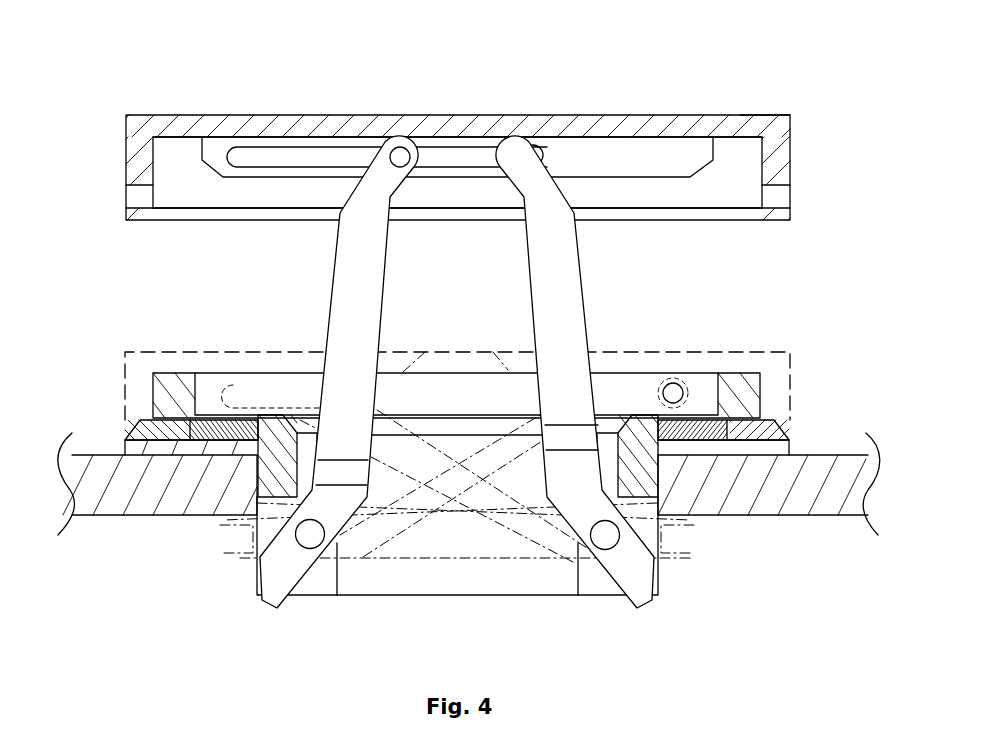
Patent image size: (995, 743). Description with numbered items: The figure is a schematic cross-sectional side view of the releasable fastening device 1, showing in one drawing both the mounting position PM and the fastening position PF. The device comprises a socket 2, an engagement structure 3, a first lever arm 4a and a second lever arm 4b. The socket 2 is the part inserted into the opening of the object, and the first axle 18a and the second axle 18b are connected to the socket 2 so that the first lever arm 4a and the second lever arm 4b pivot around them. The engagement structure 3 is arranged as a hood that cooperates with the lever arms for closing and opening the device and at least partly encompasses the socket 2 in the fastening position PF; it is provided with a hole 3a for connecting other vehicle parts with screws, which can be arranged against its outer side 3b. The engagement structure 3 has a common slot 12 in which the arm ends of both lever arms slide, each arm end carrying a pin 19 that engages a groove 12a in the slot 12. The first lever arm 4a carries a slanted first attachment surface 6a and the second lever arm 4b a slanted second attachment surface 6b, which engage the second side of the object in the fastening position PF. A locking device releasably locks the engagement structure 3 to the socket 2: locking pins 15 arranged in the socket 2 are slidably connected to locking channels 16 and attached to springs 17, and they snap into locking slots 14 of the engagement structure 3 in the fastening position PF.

The releasable fastening device 1 is at (100, 72).
The socket 2 is at (460, 565).
The engagement structure 3 is at (792, 146).
The hole 3a is at (452, 128).
The outer side 3b is at (678, 100).
The first lever arm 4a is at (355, 297).
The second lever arm 4b is at (560, 297).
The first attachment surface 6a is at (260, 583).
The second attachment surface 6b is at (656, 583).
The slot 12 is at (613, 157).
The groove 12a is at (275, 152).
The locking slot 14 is at (135, 196).
The locking pin 15 is at (130, 432).
The locking channel 16 is at (178, 468).
The spring 17 is at (208, 446).
The first axle 18a is at (310, 550).
The second axle 18b is at (605, 552).
The sliding pin 19 is at (398, 150).
The mounting position PM is at (785, 70).
The fastening position PF is at (812, 341).